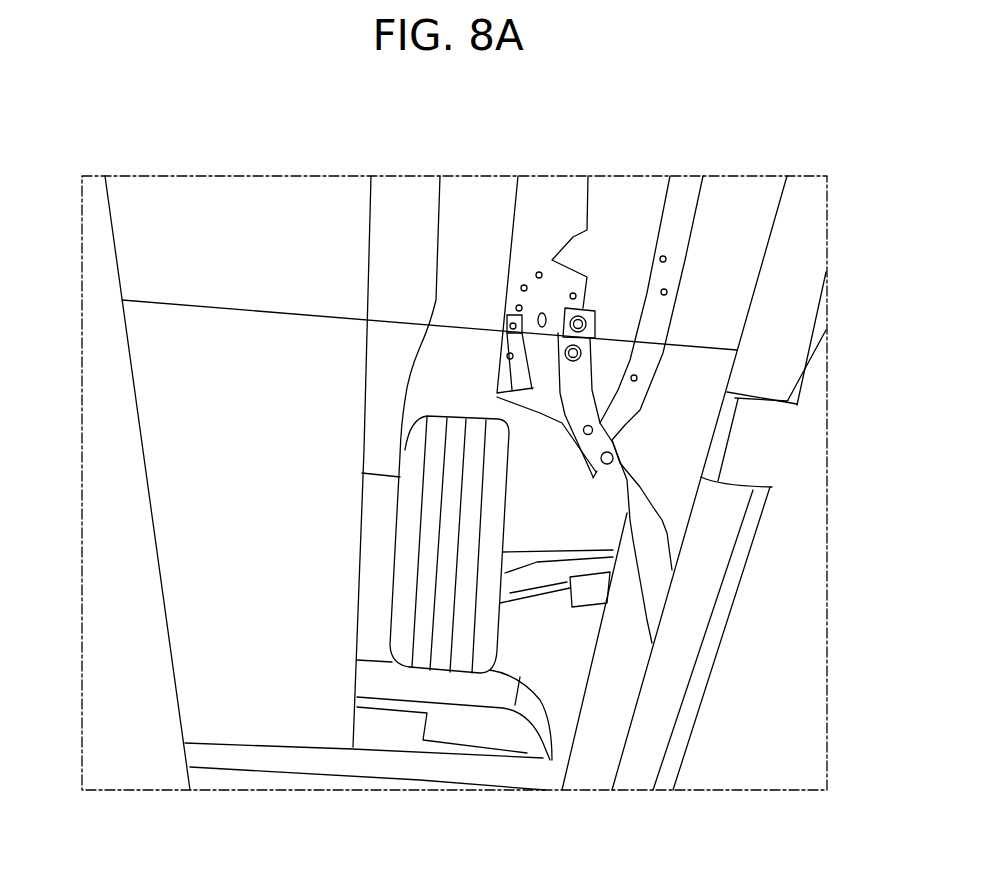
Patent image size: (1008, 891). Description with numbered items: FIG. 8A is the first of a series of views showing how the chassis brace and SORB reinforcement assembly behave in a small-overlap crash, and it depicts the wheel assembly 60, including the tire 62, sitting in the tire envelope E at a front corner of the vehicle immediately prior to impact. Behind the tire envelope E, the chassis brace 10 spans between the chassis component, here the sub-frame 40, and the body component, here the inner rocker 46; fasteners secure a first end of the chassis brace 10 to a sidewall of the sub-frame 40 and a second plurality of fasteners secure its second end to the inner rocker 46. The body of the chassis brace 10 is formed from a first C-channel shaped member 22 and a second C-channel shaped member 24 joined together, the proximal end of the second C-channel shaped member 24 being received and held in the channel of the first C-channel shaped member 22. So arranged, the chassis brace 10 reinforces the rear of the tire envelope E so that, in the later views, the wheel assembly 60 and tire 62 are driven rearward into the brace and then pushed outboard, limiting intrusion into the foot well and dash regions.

The chassis brace 10 is at (537, 357).
The first C-channel shaped member 22 is at (537, 403).
The second C-channel shaped member 24 is at (510, 342).
The sub-frame 40 is at (640, 497).
The inner rocker 46 is at (530, 245).
The wheel assembly 60 is at (348, 571).
The tire 62 is at (403, 612).
The tire envelope E is at (563, 467).